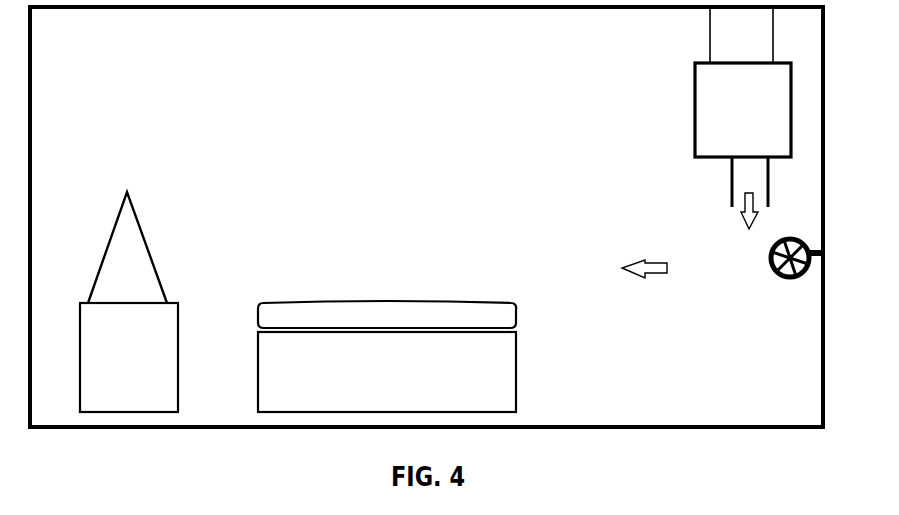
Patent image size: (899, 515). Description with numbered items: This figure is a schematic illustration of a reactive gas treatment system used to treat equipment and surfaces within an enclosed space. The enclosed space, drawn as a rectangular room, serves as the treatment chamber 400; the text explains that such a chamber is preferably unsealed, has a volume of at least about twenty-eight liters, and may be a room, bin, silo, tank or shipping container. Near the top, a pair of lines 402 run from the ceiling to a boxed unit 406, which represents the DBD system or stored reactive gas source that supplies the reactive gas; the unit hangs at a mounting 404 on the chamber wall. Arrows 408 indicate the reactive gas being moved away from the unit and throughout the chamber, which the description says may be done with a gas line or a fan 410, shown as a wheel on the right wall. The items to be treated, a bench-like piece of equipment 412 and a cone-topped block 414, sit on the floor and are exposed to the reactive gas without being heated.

The sample enclosure / environment 400 is at (110, 52).
The leads / wires 402 is at (773, 41).
The wall / mounting 404 is at (822, 70).
The sensor device 406 is at (743, 135).
The direction arrows 408 is at (743, 218).
The fan / wheel 410 is at (775, 280).
The bench / table 412 is at (435, 301).
The cone-topped block 414 is at (160, 278).